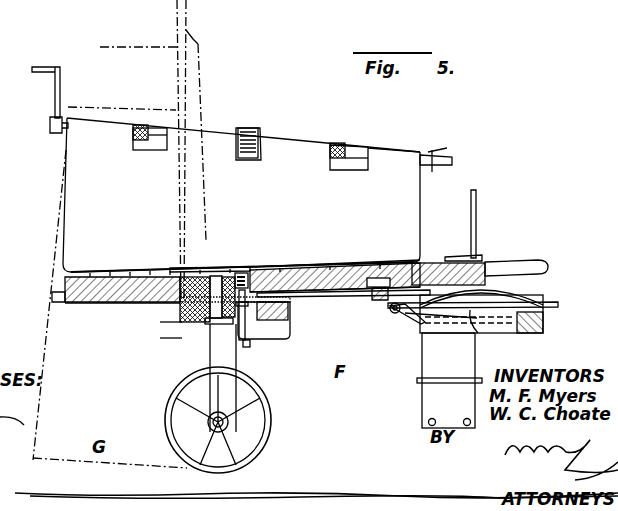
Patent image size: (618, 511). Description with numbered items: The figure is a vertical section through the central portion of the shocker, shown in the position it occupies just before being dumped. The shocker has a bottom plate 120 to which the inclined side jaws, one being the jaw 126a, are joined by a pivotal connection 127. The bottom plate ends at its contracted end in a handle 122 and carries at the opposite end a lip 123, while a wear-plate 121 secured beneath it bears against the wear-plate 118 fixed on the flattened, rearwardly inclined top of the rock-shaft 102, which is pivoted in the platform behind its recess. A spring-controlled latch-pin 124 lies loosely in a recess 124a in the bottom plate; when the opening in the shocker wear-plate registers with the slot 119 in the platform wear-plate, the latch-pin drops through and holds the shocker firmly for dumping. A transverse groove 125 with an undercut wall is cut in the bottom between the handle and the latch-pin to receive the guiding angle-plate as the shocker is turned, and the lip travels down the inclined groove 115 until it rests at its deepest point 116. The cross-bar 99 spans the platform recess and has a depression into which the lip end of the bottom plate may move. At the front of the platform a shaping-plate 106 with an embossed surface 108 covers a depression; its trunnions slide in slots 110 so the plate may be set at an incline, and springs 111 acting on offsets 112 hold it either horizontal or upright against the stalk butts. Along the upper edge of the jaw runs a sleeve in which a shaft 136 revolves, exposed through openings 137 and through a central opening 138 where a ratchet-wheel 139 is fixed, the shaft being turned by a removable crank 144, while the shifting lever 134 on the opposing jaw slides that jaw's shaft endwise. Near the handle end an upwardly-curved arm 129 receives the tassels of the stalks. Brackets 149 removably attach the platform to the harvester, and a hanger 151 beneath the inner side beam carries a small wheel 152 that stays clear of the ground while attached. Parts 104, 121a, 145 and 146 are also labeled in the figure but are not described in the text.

The bar 99 is at (262, 336).
The rock-shaft 102 is at (192, 324).
The box 104 is at (537, 326).
The plate 106 is at (559, 303).
The embossed surface 108 is at (498, 295).
The slots 110 is at (382, 303).
The springs 111 is at (497, 312).
The offsets 112 is at (397, 314).
The groove 115 is at (342, 300).
The lowest point of groove 116 is at (415, 266).
The wear-plate 118 is at (182, 306).
The slot 119 is at (232, 272).
The bottom plate 120 is at (207, 62).
The wear-plate 121 is at (177, 274).
The shaft 121a is at (218, 274).
The handle 122 is at (531, 264).
The lip 123 is at (54, 295).
The latch-pin 124 is at (273, 269).
The recess 124a is at (256, 271).
The transverse groove 125 is at (388, 278).
The jaw 126a is at (418, 168).
The pivotal connection 127 is at (145, 125).
The upwardly-curved arm 129 is at (477, 189).
The shifting lever 134 is at (343, 165).
The shaft 136 is at (163, 128).
The openings 137 is at (148, 150).
The central opening 138 is at (262, 150).
The ratchet-wheel 139 is at (252, 140).
The crank 144 is at (56, 105).
The pin 145 is at (476, 257).
The catch 146 is at (440, 151).
The brackets 149 is at (449, 380).
The hanger 151 is at (218, 394).
The small wheel 152 is at (271, 432).